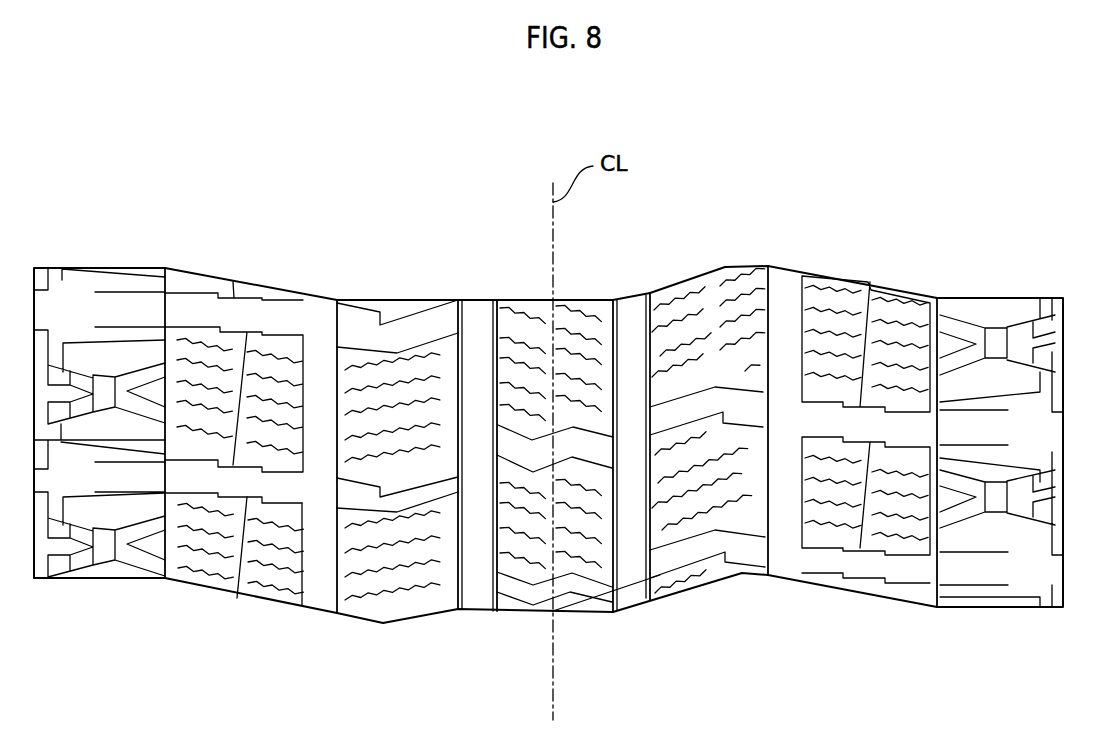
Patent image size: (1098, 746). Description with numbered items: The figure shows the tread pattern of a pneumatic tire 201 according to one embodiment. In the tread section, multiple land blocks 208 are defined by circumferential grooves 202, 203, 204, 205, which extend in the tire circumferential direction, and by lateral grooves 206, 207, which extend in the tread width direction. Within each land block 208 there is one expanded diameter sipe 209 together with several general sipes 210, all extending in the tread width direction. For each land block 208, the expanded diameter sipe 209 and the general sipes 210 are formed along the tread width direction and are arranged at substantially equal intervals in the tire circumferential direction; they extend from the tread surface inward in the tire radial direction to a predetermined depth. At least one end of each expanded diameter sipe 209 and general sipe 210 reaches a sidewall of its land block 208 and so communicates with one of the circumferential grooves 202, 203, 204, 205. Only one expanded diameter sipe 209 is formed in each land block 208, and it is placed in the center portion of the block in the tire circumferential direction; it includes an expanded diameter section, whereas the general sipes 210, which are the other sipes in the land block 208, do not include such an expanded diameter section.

The pneumatic tire 201 is at (951, 188).
The circumferential groove 202 is at (322, 320).
The circumferential groove 203 is at (478, 305).
The circumferential groove 204 is at (632, 302).
The circumferential groove 205 is at (783, 292).
The lateral groove 206 is at (200, 305).
The lateral groove 207 is at (208, 478).
The land block 208 is at (444, 594).
The expanded diameter sipe 209 is at (412, 400).
The general sipe 210 is at (362, 598).